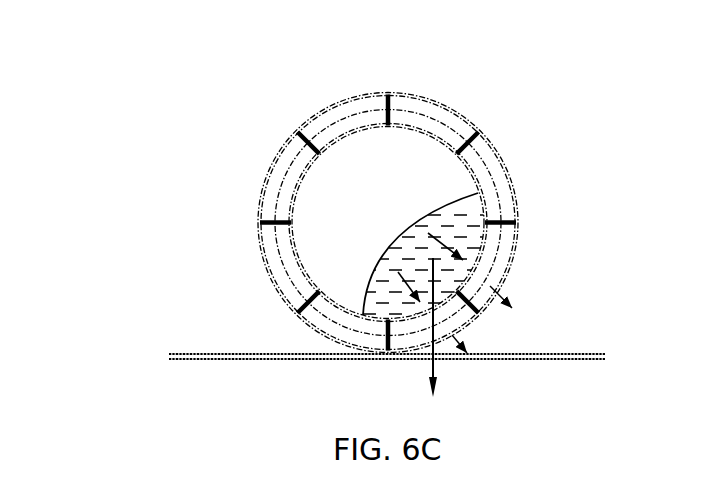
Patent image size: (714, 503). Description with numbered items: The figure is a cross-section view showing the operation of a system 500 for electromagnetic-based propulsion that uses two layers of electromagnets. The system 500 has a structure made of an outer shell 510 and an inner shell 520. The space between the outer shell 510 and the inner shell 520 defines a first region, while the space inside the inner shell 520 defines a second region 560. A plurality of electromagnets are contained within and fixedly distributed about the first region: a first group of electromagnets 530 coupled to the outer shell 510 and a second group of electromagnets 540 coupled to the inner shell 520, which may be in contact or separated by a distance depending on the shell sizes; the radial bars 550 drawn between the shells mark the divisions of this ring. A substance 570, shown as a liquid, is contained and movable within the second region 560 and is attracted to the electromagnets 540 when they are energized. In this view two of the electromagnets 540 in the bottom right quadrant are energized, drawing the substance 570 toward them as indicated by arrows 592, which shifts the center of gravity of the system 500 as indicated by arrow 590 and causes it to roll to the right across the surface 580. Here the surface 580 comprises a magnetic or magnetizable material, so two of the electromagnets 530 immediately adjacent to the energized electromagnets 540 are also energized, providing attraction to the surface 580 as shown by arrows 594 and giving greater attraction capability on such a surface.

The system 500 is at (117, 137).
The outer shell 510 is at (276, 153).
The inner shell 520 is at (352, 131).
The first group of electromagnets 530 is at (404, 102).
The second group of electromagnets 540 is at (430, 124).
The radial partitions 550 is at (477, 134).
The second region 560 is at (312, 201).
The substance 570 is at (372, 287).
The surface 580 is at (576, 360).
The arrow 590 is at (430, 377).
The arrows 592 is at (437, 243).
The arrows 594 is at (505, 298).